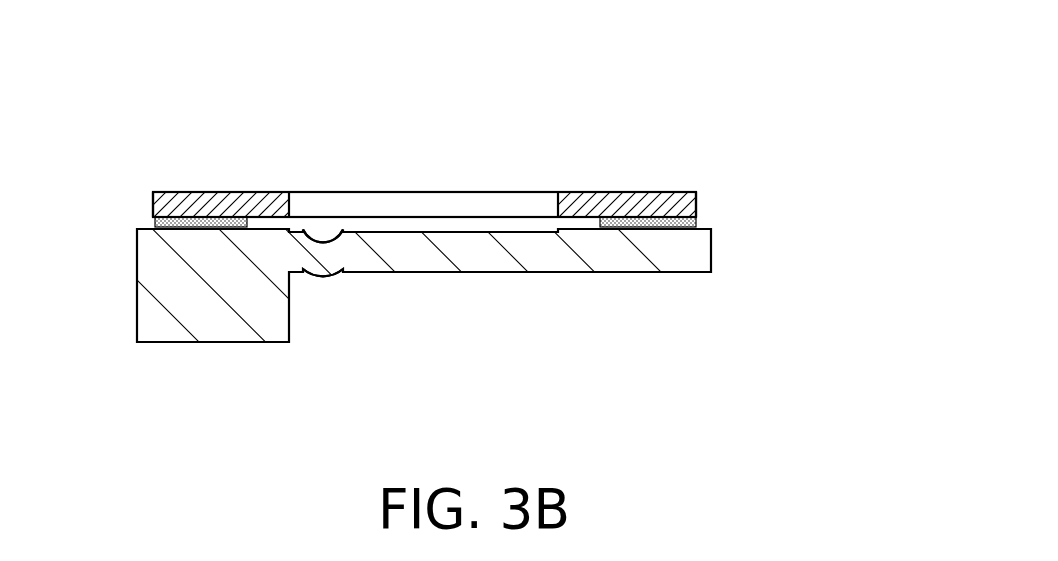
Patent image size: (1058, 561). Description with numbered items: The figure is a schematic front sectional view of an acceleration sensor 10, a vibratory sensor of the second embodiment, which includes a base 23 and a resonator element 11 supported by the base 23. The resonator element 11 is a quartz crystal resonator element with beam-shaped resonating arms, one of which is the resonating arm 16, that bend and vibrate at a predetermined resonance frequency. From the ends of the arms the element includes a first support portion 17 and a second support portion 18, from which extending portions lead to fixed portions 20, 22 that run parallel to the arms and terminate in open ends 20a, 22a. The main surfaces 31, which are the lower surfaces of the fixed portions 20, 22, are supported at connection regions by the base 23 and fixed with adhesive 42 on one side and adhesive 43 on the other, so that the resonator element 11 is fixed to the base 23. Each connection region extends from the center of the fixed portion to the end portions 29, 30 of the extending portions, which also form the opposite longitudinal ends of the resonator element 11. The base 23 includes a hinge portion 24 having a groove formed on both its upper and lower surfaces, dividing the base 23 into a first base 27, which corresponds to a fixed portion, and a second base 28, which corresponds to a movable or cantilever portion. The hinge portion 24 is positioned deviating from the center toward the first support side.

The acceleration sensor 10 is at (421, 237).
The resonator element 11 is at (426, 148).
The resonating arm 16 is at (457, 203).
The first support portion 17 is at (200, 213).
The second support portion 18 is at (648, 203).
The fixed portion 20 is at (268, 190).
The open end 20a is at (290, 207).
The fixed portion 22 is at (578, 190).
The open end 22a is at (558, 202).
The base 23 is at (393, 301).
The hinge portion 24 is at (322, 268).
The first base 27 is at (217, 330).
The second base 28 is at (687, 262).
The end portion 29 is at (153, 205).
The end portion 30 is at (697, 197).
The main surface 31 is at (572, 220).
The adhesive 42 is at (153, 225).
The adhesive 43 is at (697, 222).